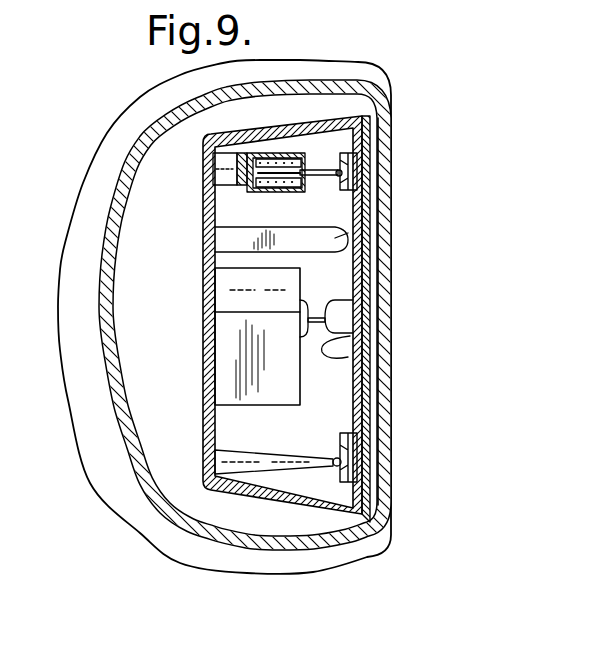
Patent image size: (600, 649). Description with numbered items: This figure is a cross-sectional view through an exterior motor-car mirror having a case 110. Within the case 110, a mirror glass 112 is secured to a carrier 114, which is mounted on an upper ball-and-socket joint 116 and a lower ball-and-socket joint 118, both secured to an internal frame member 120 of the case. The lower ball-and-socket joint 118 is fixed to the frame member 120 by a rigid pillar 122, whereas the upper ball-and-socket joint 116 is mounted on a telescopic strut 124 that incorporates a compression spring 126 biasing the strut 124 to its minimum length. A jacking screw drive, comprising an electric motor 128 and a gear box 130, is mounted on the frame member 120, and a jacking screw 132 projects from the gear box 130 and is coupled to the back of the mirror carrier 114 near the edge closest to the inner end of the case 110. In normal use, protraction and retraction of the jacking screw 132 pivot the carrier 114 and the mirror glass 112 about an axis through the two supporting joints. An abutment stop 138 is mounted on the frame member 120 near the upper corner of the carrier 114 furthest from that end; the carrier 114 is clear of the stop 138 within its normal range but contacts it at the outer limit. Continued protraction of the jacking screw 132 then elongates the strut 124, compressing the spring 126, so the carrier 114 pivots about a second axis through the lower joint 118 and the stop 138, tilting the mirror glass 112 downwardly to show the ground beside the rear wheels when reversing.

The case 110 is at (298, 61).
The mirror glass 112 is at (380, 278).
The carrier 114 is at (370, 383).
The upper ball-and-socket joint 116 is at (345, 176).
The lower ball-and-socket joint 118 is at (333, 462).
The internal frame member 120 is at (206, 262).
The rigid pillar 122 is at (250, 458).
The telescopic strut 124 is at (216, 166).
The compression spring 126 is at (288, 157).
The electric motor 128 is at (222, 343).
The gear box 130 is at (222, 298).
The jacking screw 132 is at (357, 349).
The abutment stop 138 is at (336, 240).